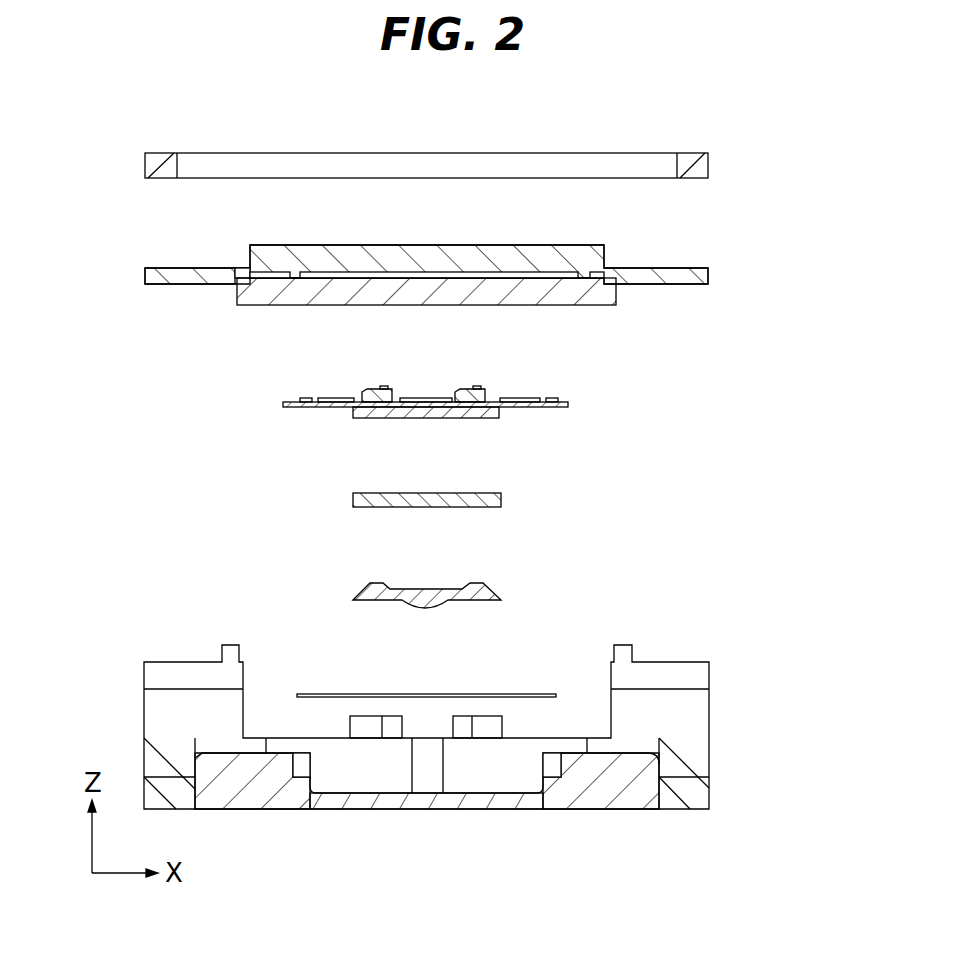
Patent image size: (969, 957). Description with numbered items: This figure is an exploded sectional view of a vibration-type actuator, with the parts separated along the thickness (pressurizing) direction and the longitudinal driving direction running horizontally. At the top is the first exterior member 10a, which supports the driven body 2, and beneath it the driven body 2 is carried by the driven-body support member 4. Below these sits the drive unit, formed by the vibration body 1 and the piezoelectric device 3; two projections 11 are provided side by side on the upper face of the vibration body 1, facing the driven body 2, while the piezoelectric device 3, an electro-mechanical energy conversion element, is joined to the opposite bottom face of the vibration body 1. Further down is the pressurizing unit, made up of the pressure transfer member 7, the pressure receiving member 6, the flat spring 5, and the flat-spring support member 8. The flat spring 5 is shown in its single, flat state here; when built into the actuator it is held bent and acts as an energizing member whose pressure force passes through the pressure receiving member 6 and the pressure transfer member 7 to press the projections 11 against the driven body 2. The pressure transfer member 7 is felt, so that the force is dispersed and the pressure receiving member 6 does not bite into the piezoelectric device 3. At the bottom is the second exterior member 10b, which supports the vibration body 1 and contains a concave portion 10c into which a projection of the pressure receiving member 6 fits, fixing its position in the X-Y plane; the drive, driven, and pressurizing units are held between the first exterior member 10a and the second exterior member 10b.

The vibration body 1 is at (568, 402).
The driven body 2 is at (613, 300).
The piezoelectric device 3 is at (495, 412).
The driven-body support member 4 is at (595, 257).
The flat spring 5 is at (513, 693).
The pressure receiving member 6 is at (487, 593).
The pressure transfer member 7 is at (492, 500).
The flat-spring support member 8 is at (592, 795).
The first exterior member 10a is at (694, 171).
The second exterior member 10b is at (704, 771).
The concave portion 10c is at (430, 775).
The projections 11 is at (379, 388).